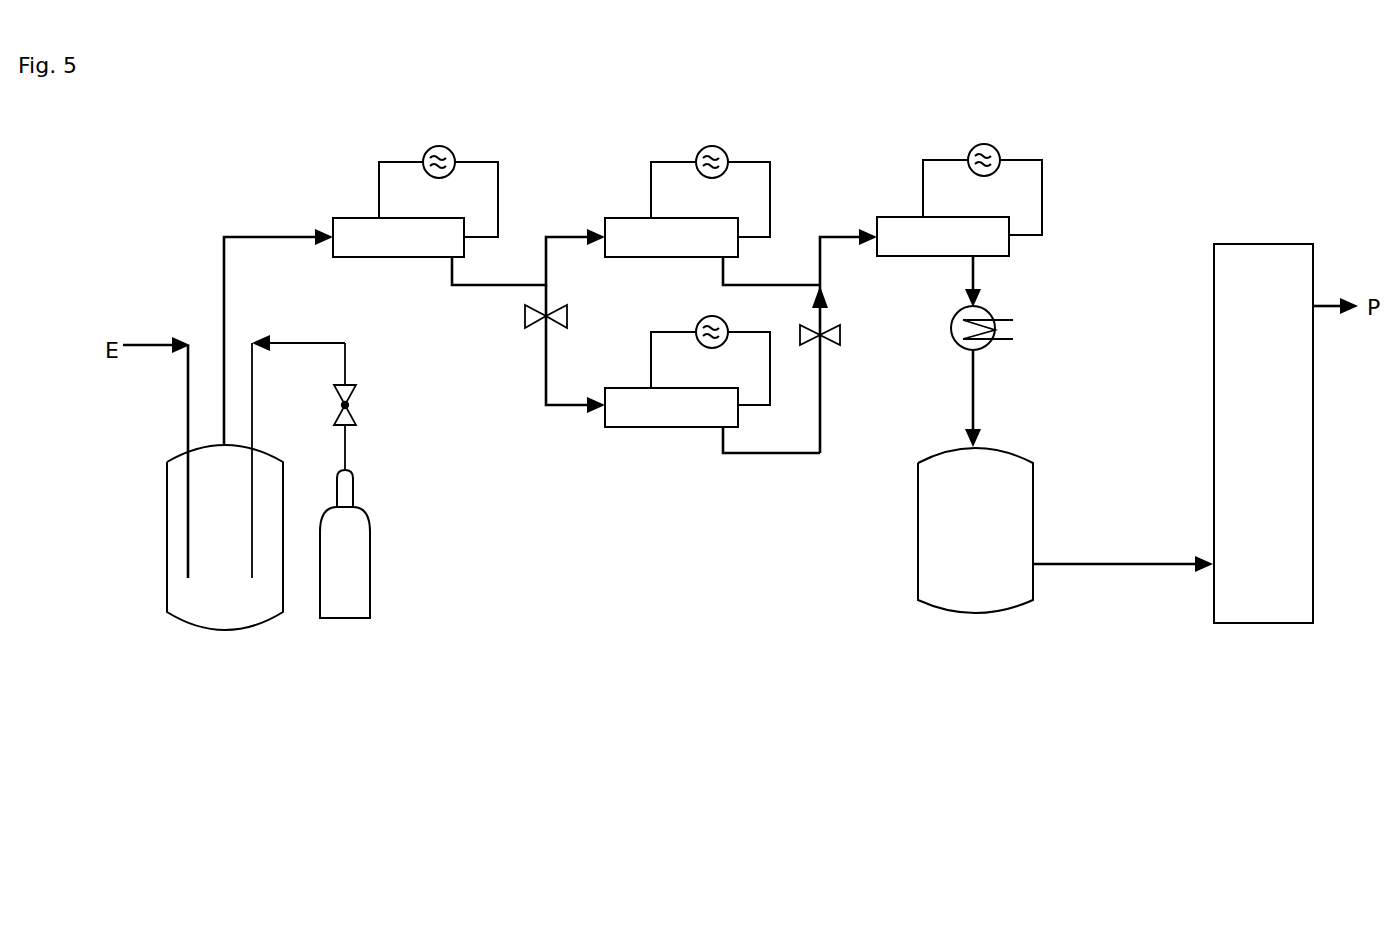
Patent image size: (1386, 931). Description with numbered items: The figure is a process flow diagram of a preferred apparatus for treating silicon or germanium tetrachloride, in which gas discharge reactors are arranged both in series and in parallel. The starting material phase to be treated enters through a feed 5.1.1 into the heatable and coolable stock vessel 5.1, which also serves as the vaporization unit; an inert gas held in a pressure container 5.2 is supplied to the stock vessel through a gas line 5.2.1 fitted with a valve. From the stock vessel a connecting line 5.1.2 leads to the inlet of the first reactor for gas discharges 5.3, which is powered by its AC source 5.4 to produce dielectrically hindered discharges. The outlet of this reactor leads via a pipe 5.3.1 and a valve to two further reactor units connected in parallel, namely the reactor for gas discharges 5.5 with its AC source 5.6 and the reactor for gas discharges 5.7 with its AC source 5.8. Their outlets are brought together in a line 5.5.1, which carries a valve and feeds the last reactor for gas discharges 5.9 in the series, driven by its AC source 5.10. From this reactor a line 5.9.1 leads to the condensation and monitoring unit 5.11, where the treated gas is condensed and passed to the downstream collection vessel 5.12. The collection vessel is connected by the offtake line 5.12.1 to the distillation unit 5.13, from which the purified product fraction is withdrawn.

The stock vessel 5.1 is at (225, 537).
The educt feed line E 5.1.1 is at (156, 450).
The line from vessel to heat exchanger 5.1.2 is at (278, 329).
The inert gas in pressure container 5.2 is at (345, 480).
The gas supply line 5.2.1 is at (298, 452).
The reactor for gas discharges 5.3 is at (398, 237).
The connecting line 5.3.1 is at (636, 356).
The AC source 5.4 is at (438, 180).
The reactor for gas discharges 5.5 is at (671, 237).
The connecting line with valve 5.5.1 is at (800, 341).
The AC source 5.6 is at (710, 180).
The reactor for gas discharges 5.7 is at (671, 407).
The AC source 5.8 is at (710, 349).
The reactor for gas discharges 5.9 is at (943, 236).
The connecting line 5.9.1 is at (1001, 281).
The AC source 5.10 is at (982, 178).
The condensation and monitoring unit 5.11 is at (1010, 376).
The collection vessel 5.12 is at (975, 530).
The offtake line 5.12.1 is at (1123, 556).
The distillation unit 5.13 is at (1263, 433).